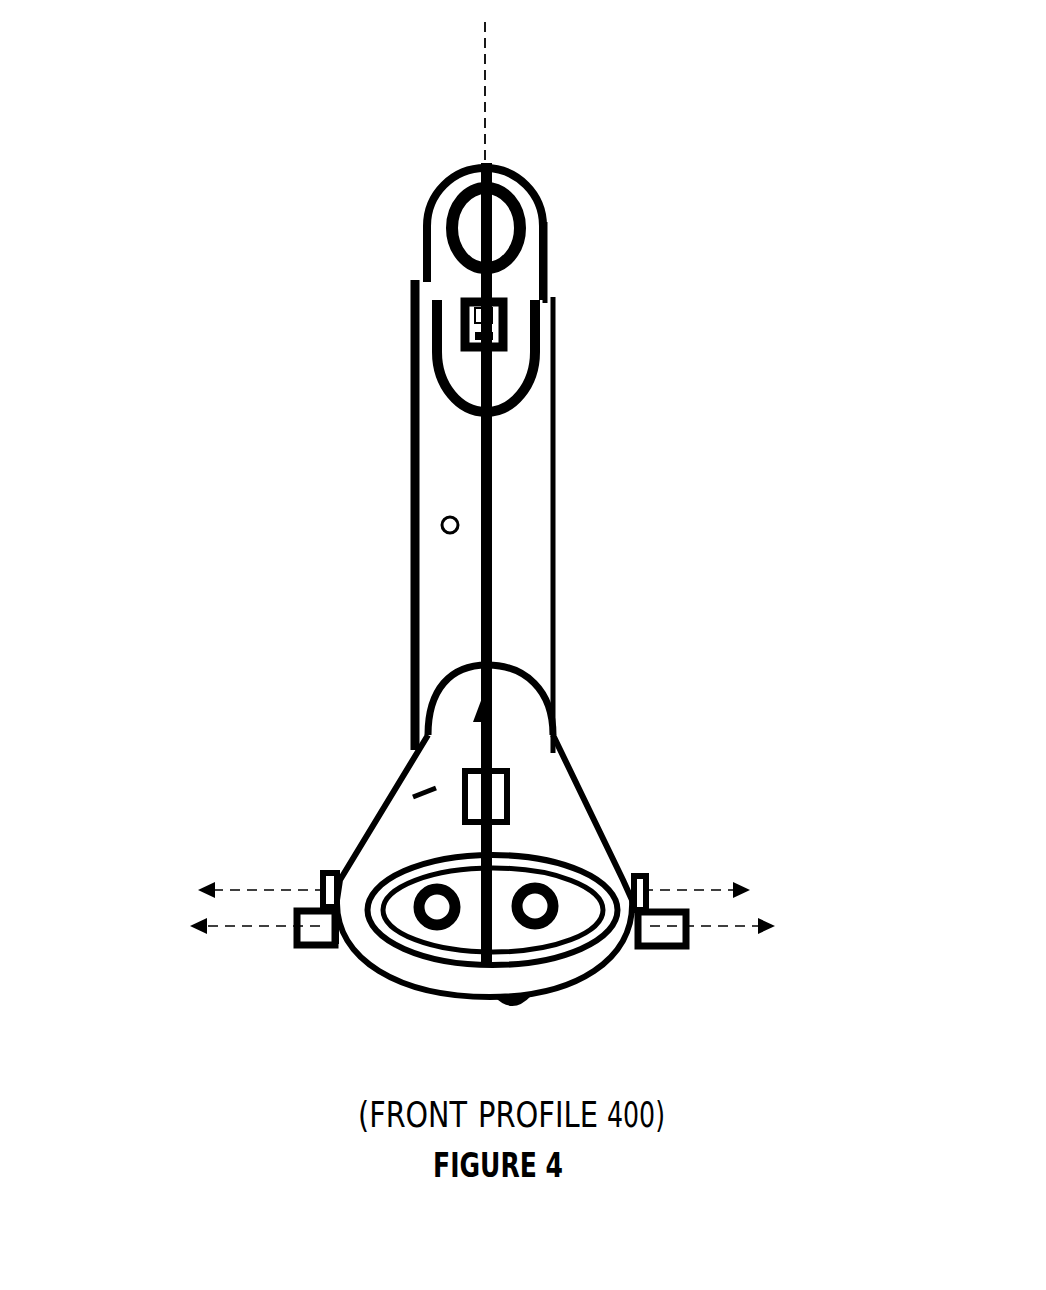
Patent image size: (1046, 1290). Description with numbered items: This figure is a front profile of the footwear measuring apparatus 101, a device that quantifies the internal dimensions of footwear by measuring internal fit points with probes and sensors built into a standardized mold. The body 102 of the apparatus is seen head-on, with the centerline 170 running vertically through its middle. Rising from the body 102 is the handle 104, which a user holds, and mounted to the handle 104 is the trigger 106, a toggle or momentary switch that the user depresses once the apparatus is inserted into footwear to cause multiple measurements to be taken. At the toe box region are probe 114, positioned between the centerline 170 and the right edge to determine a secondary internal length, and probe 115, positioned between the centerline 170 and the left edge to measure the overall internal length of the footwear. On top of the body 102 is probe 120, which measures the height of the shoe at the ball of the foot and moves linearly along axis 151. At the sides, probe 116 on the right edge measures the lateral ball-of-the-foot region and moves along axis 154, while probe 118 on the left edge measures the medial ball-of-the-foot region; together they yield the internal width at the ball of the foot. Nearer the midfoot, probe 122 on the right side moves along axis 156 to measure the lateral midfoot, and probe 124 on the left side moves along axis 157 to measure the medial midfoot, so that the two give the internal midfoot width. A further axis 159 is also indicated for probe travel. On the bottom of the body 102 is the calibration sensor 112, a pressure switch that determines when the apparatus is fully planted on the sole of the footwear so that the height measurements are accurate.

The footwear measuring apparatus 101 is at (699, 113).
The body 102 is at (447, 648).
The handle 104 is at (443, 273).
The trigger 106 is at (463, 322).
The calibration sensor 112 is at (492, 1003).
The probe 114 is at (422, 898).
The probe 115 is at (525, 887).
The probe 116 is at (314, 947).
The probe 118 is at (652, 950).
The probe 120 is at (465, 783).
The probe 122 is at (328, 876).
The probe 124 is at (620, 875).
The axis 151 is at (490, 722).
The axis 154 is at (203, 932).
The axis 156 is at (213, 893).
The axis 157 is at (703, 890).
The axis 159 is at (746, 930).
The centerline 170 is at (486, 67).